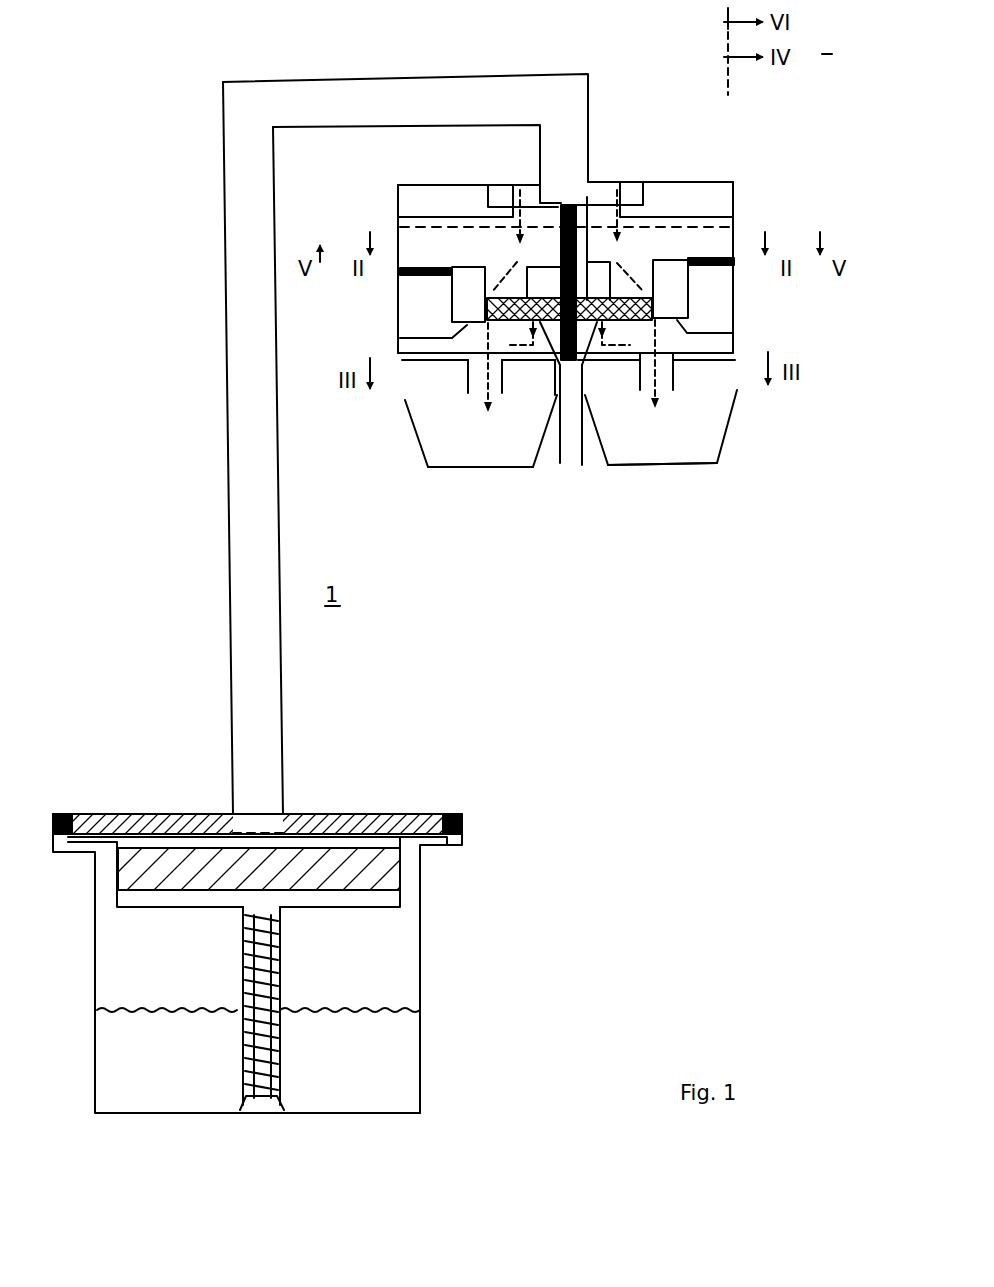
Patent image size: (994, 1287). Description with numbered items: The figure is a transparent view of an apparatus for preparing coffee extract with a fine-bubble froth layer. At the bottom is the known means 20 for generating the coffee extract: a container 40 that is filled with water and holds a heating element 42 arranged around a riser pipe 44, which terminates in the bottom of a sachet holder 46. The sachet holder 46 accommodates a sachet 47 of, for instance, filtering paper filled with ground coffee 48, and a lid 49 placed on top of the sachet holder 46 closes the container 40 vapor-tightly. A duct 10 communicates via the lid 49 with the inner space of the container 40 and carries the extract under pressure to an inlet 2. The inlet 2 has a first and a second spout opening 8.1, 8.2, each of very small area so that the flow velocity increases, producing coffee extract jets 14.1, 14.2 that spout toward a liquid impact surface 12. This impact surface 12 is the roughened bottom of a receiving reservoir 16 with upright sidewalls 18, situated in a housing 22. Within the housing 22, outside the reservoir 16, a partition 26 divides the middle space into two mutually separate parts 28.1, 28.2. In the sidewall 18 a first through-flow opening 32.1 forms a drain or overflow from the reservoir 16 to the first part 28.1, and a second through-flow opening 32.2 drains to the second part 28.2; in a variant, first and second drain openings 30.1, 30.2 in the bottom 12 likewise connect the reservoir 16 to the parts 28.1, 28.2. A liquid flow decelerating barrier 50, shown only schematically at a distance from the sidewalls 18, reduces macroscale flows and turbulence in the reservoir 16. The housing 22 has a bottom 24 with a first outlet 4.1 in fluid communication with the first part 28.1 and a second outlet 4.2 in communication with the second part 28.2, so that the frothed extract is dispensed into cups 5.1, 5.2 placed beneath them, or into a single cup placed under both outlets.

The inlet 2 is at (590, 92).
The duct 10 is at (484, 77).
The housing 22 is at (733, 196).
The liquid impact surface 12 is at (400, 338).
The first coffee extract jet 14.1 is at (455, 217).
The second coffee extract jet 14.2 is at (672, 212).
The first spout opening 8.1 is at (512, 205).
The second spout opening 8.2 is at (620, 200).
The liquid flow decelerating barrier 50 is at (588, 197).
The first through-flow opening 32.1 is at (503, 265).
The second through-flow opening 32.2 is at (632, 262).
The upright sidewall 18 is at (468, 311).
The receiving reservoir 16 is at (670, 305).
The bottom of housing 24 is at (501, 391).
The first drain opening 30.1 is at (560, 463).
The second drain opening 30.2 is at (582, 465).
The partition 26 is at (572, 360).
The first part of housing 28.1 is at (428, 347).
The second part of housing 28.2 is at (713, 338).
The first outlet 4.1 is at (480, 393).
The second outlet 4.2 is at (665, 390).
The first cup 5.1 is at (447, 470).
The second cup 5.2 is at (698, 465).
The lid 49 is at (155, 814).
The means for generating the coffee extract 20 is at (422, 1092).
The ground coffee 48 is at (133, 880).
The sachet 47 is at (185, 888).
The sachet holder 46 is at (367, 1006).
The riser pipe 44 is at (283, 988).
The heating element 42 is at (283, 1037).
The container 40 is at (422, 1060).